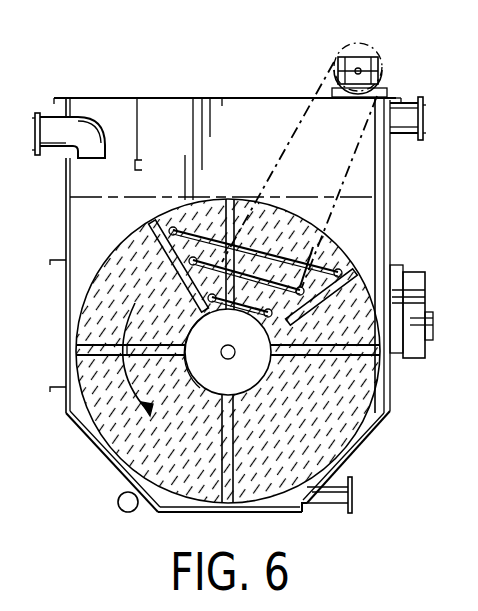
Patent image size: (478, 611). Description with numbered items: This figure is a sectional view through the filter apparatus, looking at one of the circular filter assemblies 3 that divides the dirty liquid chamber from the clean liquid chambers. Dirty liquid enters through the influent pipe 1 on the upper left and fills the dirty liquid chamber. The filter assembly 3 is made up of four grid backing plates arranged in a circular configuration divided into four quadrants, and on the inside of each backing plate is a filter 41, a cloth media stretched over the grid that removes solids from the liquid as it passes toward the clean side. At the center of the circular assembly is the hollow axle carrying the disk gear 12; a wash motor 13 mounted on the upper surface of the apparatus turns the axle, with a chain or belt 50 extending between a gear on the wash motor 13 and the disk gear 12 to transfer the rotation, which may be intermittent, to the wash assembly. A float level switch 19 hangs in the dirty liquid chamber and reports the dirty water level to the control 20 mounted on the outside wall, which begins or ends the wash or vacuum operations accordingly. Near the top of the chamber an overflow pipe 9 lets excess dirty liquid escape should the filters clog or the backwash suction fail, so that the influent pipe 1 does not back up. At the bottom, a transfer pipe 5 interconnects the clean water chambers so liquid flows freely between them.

The influent pipe 1 is at (35, 113).
The float level switch 19 is at (138, 113).
The drive belt 50 is at (329, 64).
The wash motor 13 is at (360, 61).
The overflow pipe 9 is at (424, 126).
The control 20 is at (428, 268).
The filter assembly 3 is at (123, 263).
The disk gear 12 is at (215, 363).
The filter 41 is at (103, 438).
The transfer pipe 5 is at (118, 503).